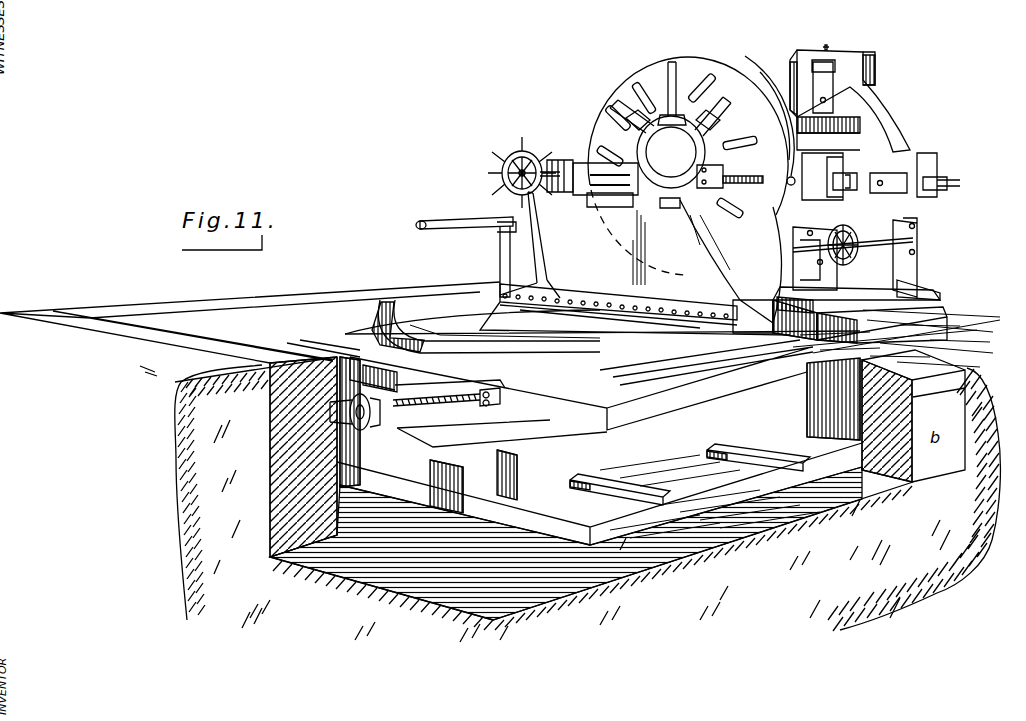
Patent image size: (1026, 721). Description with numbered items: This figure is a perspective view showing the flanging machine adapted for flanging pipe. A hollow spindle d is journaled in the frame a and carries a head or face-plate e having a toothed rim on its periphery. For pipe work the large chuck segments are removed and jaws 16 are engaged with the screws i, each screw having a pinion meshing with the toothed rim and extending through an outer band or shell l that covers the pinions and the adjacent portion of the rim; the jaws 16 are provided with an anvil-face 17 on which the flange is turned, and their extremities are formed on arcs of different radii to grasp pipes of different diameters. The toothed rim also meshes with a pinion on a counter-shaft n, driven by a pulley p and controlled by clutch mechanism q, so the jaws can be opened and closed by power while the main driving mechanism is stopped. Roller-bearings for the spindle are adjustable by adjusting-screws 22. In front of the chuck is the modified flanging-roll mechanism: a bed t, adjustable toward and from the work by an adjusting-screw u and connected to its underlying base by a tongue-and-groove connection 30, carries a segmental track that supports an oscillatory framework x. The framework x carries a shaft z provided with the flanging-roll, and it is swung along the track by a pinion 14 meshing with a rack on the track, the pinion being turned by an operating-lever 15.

The pinion 14 is at (527, 172).
The operating-lever 15 is at (466, 245).
The jaws 16 is at (676, 146).
The anvil-face 17 is at (671, 152).
The adjusting-screws 22 is at (878, 113).
The tongue-and-groove connection 30 is at (578, 480).
The frame a is at (908, 259).
The hollow spindle d is at (850, 101).
The head e is at (691, 135).
The screw i is at (774, 144).
The outer band or shell l is at (731, 266).
The counter-shaft n is at (853, 234).
The pulley p is at (848, 228).
The clutch mechanism q is at (815, 258).
The bed t is at (600, 413).
The adjusting-screw u is at (448, 394).
The framework x is at (635, 262).
The shaft z is at (592, 183).